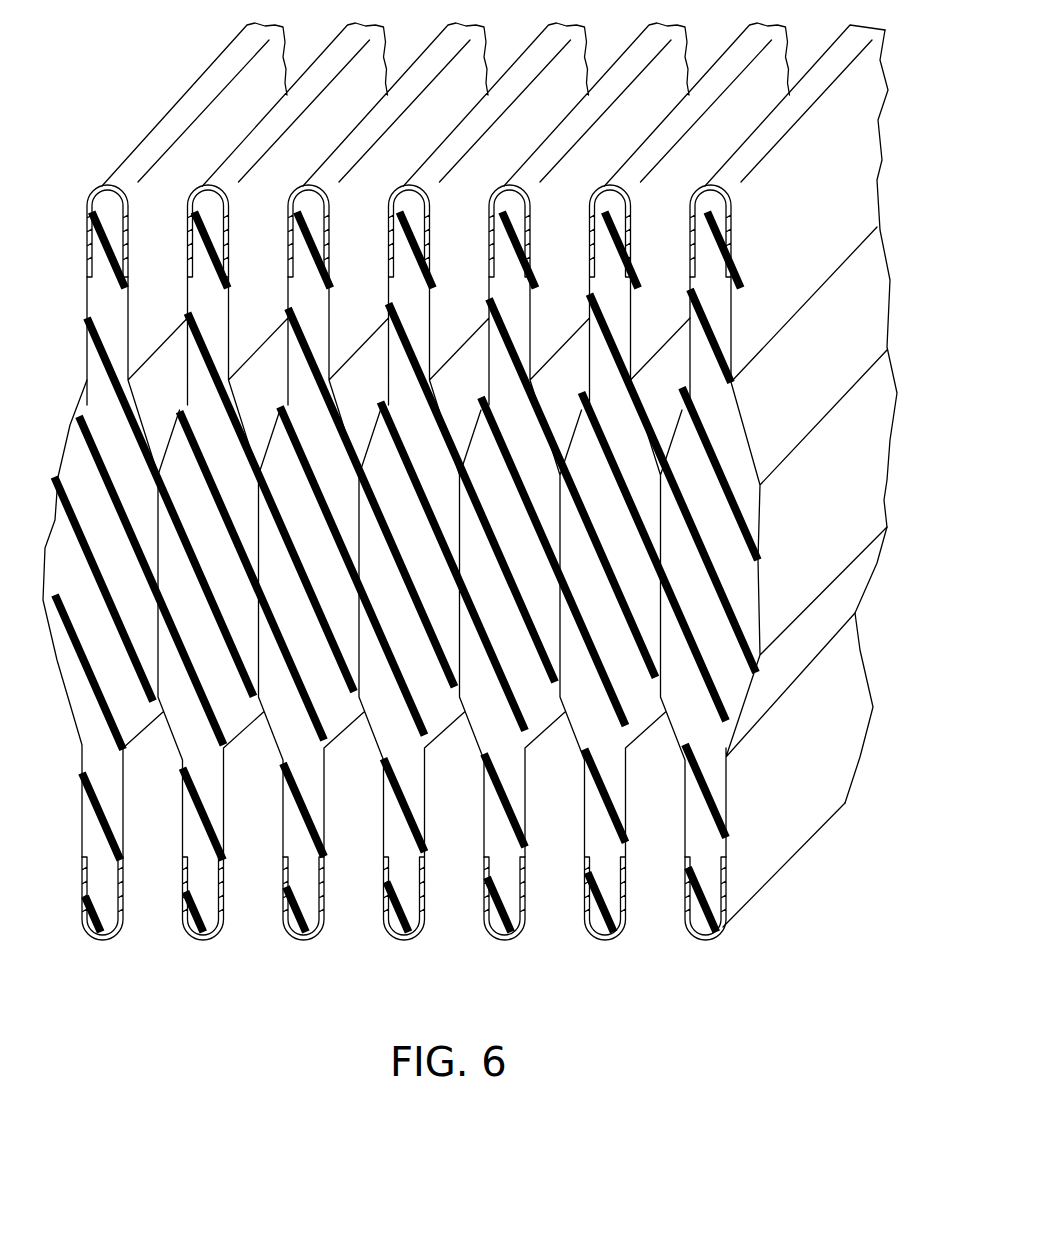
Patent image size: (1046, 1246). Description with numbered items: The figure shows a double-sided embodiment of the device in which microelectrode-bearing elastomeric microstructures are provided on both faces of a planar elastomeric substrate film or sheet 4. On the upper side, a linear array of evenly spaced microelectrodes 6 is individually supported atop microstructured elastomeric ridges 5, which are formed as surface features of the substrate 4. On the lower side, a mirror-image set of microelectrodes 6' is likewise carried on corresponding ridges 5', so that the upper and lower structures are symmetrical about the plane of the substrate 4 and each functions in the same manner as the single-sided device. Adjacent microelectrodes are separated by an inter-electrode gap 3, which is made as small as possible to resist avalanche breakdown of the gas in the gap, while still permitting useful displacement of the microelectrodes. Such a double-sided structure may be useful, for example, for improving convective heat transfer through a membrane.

The inter-electrode gap 3 is at (188, 262).
The elastomeric substrate film or sheet 4 is at (101, 523).
The microstructured elastomeric ridges 5 is at (437, 454).
The microstructured elastomeric ridges 5' is at (413, 660).
The microelectrodes 6 is at (408, 173).
The microelectrodes 6' is at (404, 951).